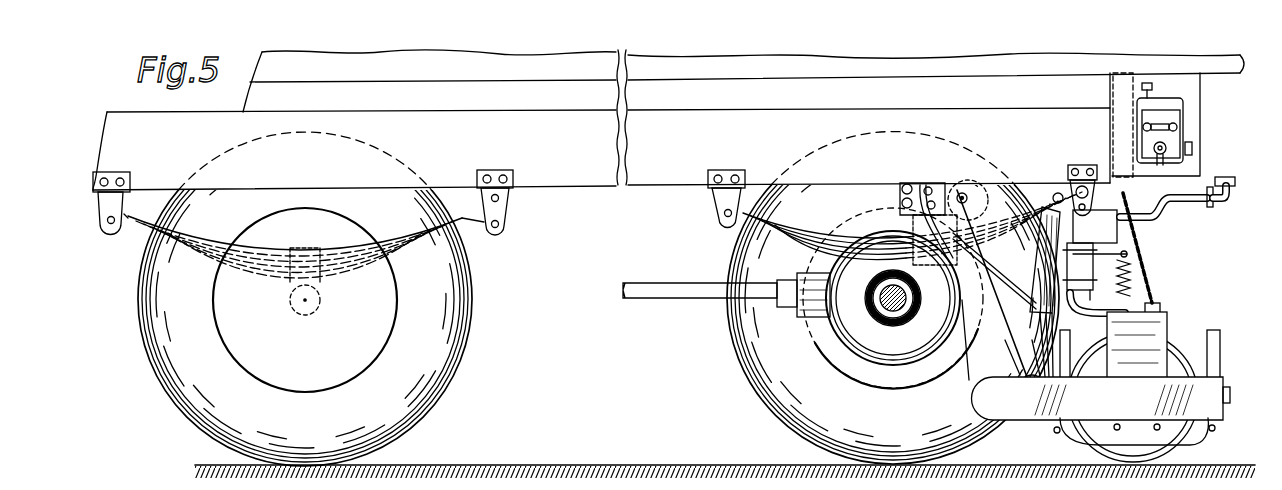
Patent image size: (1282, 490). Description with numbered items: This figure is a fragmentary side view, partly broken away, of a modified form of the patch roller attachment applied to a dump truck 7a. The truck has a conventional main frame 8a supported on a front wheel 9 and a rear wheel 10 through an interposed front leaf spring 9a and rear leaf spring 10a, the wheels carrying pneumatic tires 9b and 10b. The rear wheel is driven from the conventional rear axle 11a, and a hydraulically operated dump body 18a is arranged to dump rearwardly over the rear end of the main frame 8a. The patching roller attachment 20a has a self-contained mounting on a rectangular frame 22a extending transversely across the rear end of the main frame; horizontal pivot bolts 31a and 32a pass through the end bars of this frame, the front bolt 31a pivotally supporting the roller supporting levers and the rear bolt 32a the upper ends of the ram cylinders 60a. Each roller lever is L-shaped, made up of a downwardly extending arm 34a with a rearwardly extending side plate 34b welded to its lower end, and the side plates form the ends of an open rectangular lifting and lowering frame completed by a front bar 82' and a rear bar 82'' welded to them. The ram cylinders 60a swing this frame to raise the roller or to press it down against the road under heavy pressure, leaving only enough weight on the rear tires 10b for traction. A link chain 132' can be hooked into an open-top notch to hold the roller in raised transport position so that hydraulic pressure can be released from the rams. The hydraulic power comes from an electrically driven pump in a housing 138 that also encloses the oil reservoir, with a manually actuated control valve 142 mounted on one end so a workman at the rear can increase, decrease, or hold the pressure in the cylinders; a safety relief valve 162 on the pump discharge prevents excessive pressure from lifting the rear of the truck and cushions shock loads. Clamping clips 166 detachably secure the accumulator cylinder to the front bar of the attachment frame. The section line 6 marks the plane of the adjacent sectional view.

The section line 6- 6 is at (1267, 489).
The dump truck 7a is at (239, 106).
The main frame 8a is at (332, 108).
The dump body 18a is at (589, 68).
The front wheel 9 is at (212, 360).
The front leaf spring 9a is at (152, 227).
The front pneumatic tire 9b is at (188, 417).
The front plate or bar 82' is at (362, 300).
The rear wheel 10 is at (727, 335).
The rear leaf spring 10a is at (779, 235).
The rear pneumatic tire 10b is at (786, 398).
The rear axle 11a is at (834, 330).
The rear plate or bar 82'' is at (893, 312).
The downwardly extending arm or link 34a is at (952, 327).
The rearwardly extending side plate 34b is at (1040, 400).
The patching roller attachment 20a is at (955, 170).
The horizontal pivot bolt 31a is at (952, 195).
The rectangular frame 22a is at (1006, 186).
The horizontal pivot bolt 32a is at (1057, 193).
The clamping band or clip 166 is at (1036, 209).
The ram cylinder 60a is at (1041, 257).
The link chain 132' is at (1168, 248).
The safety pressure relief valve 162 is at (1138, 90).
The hydraulic pump housing 138 is at (1184, 140).
The control valve 142 is at (1193, 147).